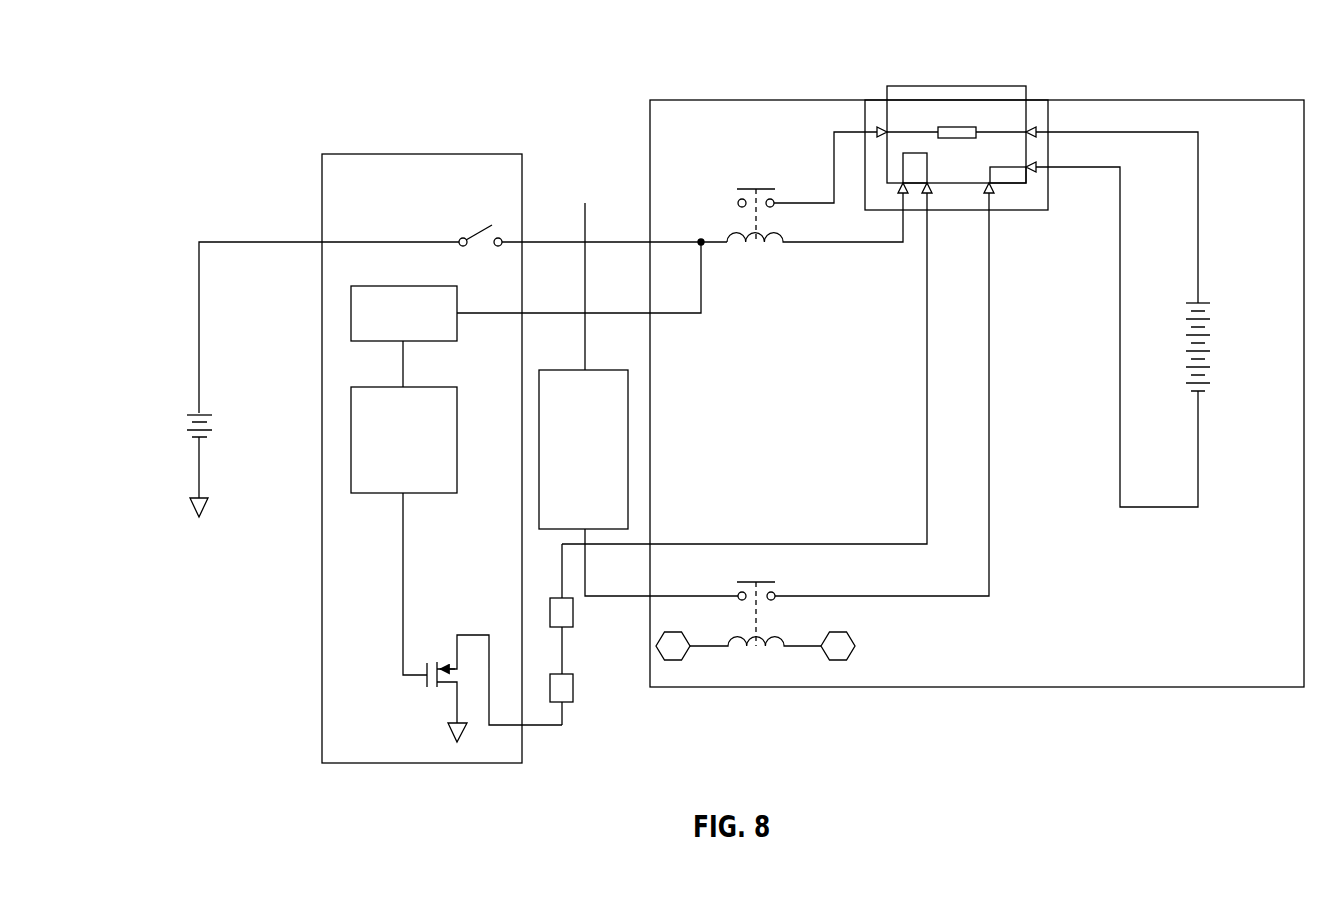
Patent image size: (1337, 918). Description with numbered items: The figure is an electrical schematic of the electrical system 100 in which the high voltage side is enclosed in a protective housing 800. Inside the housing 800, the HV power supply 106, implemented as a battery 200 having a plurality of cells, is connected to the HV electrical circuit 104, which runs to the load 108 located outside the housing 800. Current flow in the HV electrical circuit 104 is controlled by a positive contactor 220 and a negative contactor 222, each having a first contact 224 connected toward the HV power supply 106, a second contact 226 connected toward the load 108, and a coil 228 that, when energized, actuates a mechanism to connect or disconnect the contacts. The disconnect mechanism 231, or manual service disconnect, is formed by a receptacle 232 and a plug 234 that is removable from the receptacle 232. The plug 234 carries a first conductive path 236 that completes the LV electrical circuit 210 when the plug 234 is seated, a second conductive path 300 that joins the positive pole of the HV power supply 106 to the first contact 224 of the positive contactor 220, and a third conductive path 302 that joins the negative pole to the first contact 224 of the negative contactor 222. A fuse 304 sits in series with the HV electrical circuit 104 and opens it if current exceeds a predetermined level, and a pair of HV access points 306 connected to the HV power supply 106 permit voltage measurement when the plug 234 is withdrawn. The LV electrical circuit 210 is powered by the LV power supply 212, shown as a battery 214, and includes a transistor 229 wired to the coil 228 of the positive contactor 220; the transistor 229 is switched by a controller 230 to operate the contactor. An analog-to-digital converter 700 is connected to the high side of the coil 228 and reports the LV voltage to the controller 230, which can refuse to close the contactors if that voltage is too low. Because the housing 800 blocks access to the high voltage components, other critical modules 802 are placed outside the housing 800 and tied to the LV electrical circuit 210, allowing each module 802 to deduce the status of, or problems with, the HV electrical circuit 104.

The electrical system 100 is at (627, 748).
The HV electrical circuit 104 is at (834, 152).
The HV power supply 106 is at (1240, 325).
The load 108 is at (628, 447).
The battery 200 is at (1200, 302).
The LV electrical circuit 210 is at (199, 284).
The LV power supply 212 is at (161, 436).
The battery 214 is at (199, 413).
The positive contactor 220 is at (748, 178).
The negative contactor 222 is at (757, 573).
The first contact 224 is at (774, 206).
The second contact 226 is at (738, 206).
The coil 228 is at (768, 248).
The transistor 229 is at (425, 684).
The controller 230 is at (418, 387).
The disconnect mechanism 231 is at (1007, 330).
The receptacle 232 is at (877, 100).
The plug 234 is at (940, 86).
The first conductive path 236 is at (928, 170).
The second conductive path 300 is at (993, 128).
The third conductive path 302 is at (1007, 170).
The fuse 304 is at (955, 126).
The HV access point 306 is at (1028, 131).
The analog-to-digital converter 700 is at (418, 286).
The housing 800 is at (1062, 688).
The modules 802 is at (573, 612).